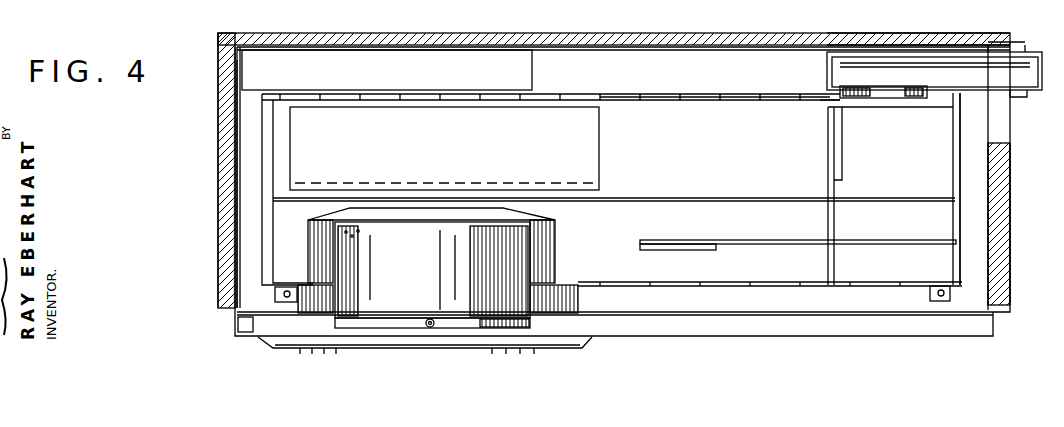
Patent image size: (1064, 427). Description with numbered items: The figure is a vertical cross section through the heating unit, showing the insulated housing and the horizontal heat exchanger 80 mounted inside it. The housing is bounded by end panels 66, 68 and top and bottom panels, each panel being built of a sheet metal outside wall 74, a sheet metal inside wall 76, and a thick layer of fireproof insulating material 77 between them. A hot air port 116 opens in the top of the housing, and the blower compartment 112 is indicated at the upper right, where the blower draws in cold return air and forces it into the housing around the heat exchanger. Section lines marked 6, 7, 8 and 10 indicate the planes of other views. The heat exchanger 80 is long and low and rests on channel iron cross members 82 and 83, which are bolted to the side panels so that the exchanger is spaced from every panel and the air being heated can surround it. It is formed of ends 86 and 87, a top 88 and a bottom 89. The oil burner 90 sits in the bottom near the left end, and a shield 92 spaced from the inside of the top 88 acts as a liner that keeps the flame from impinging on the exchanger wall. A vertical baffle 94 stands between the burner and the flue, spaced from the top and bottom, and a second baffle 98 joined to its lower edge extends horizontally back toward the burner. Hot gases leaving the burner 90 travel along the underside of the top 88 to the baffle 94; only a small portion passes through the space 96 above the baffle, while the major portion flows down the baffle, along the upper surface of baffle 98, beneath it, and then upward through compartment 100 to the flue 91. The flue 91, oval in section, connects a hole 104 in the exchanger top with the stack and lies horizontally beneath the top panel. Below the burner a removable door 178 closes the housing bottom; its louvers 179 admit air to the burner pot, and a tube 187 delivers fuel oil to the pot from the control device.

The hot air port 116 is at (301, 63).
The section line 6 is at (433, 22).
The section line 7 is at (607, 25).
The section line 8 is at (938, 28).
The section line 10 is at (430, 210).
The blower compartment 112 is at (779, 0).
The heat exchanger 80 is at (701, 96).
The top of heat exchanger 88 is at (690, 97).
The flue 91 is at (828, 75).
The space at top of baffle 96 is at (830, 103).
The hole 104 is at (890, 99).
The shield 92 is at (598, 150).
The vertical baffle 94 is at (830, 170).
The compartment 100 is at (912, 173).
The end panel 68 is at (1010, 187).
The outside wall 74 is at (218, 145).
The inside wall 76 is at (241, 162).
The insulating material 77 is at (218, 160).
The end panel 66 is at (218, 201).
The end of heat exchanger 86 is at (266, 212).
The oil burner 90 is at (436, 280).
The second baffle 98 is at (745, 240).
The bottom of heat exchanger 89 is at (748, 283).
The end of heat exchanger 87 is at (955, 219).
The cross member 82 is at (276, 292).
The cross member 83 is at (930, 294).
The tube 187 is at (432, 328).
The louvers 179 is at (518, 352).
The removable door 178 is at (583, 347).